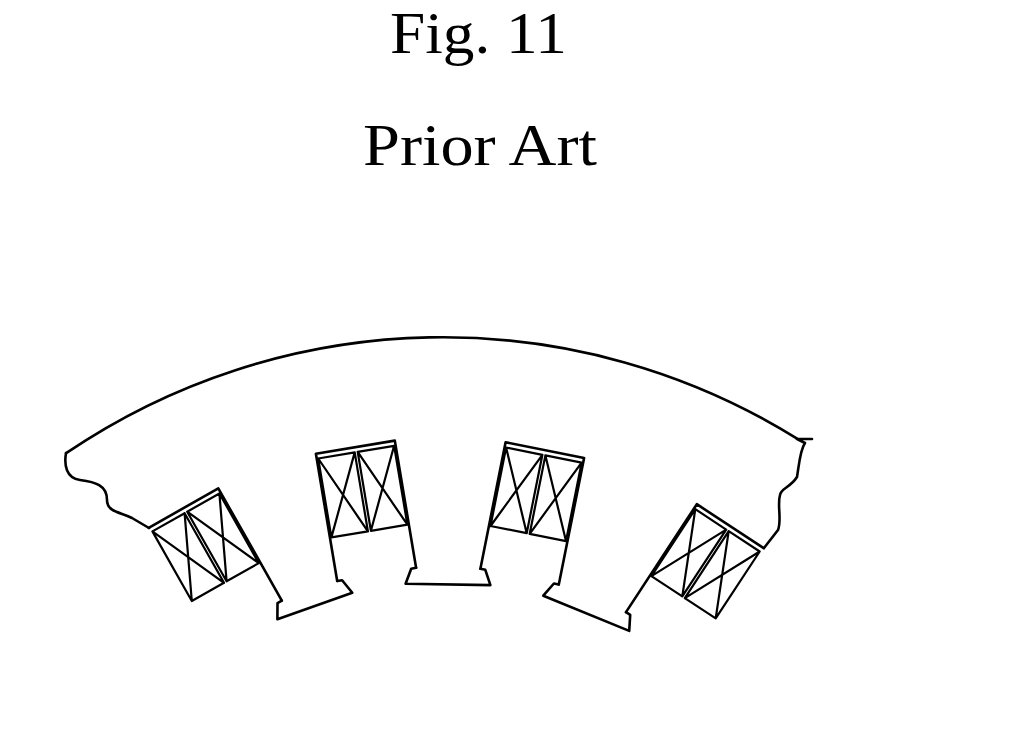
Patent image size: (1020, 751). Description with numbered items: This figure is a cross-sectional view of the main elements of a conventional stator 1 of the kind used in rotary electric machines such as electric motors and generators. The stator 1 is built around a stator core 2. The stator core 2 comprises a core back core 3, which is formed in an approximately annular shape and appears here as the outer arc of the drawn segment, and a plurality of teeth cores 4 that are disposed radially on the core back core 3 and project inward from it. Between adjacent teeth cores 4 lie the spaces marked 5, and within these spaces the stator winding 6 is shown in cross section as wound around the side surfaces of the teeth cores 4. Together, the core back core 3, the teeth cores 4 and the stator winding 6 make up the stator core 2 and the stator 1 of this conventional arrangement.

The stator 1 is at (846, 466).
The stator core 2 is at (758, 360).
The core back core 3 is at (342, 378).
The teeth core 4 is at (322, 597).
The slot 5 is at (380, 570).
The stator winding 6 is at (530, 457).